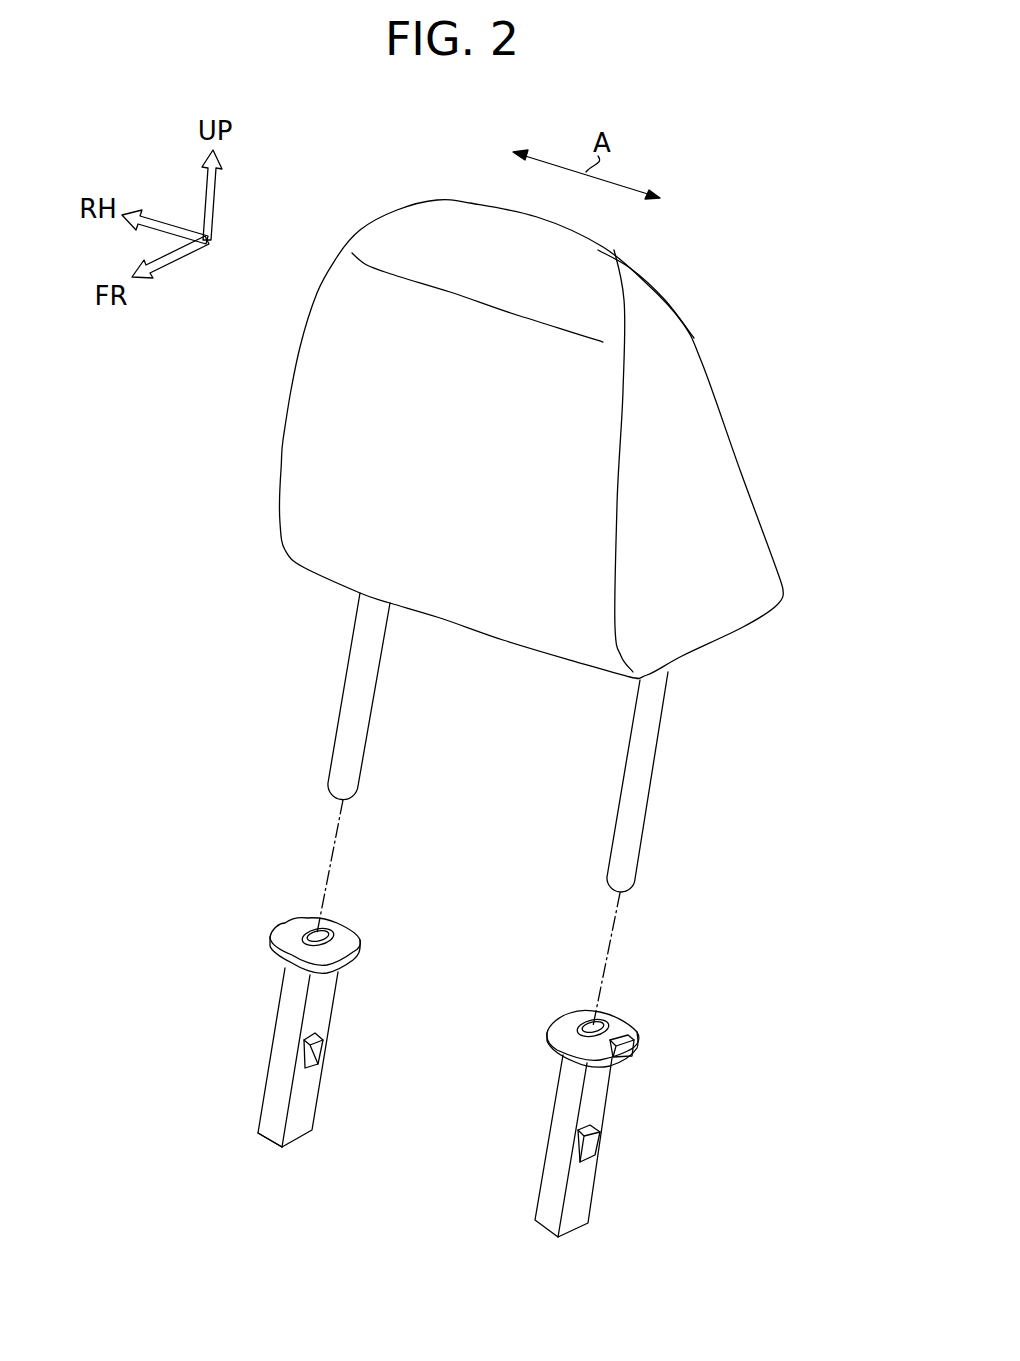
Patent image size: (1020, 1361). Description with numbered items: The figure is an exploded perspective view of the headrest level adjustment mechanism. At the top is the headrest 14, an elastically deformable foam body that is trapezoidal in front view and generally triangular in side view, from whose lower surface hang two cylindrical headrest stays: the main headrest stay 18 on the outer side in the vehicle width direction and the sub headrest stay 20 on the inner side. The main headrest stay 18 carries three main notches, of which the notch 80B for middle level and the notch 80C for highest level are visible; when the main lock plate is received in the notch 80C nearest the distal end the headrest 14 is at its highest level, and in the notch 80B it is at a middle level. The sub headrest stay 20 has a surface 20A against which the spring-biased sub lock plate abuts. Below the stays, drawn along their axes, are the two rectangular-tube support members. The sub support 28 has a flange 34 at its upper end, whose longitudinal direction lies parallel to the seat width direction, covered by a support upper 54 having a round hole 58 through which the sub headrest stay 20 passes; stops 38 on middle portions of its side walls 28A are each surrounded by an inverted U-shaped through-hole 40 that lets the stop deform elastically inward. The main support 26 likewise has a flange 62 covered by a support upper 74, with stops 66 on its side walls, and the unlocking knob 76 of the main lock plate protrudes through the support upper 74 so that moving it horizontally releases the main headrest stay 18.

The headrest 14 is at (724, 362).
The main headrest stay 18 is at (642, 798).
The sub headrest stay 20 is at (352, 682).
The surface of sub headrest stay 20A is at (349, 723).
The notch for middle level 80B is at (640, 690).
The notch for highest level 80C is at (632, 740).
The main support 26 is at (630, 1098).
The sub support 28 is at (295, 1000).
The side walls of sub support 28A is at (268, 1082).
The flange 34 is at (362, 957).
The stops 38 is at (322, 1056).
The through-hole 40 is at (326, 1048).
The support upper 54 is at (355, 932).
The round hole 58 is at (318, 934).
The flange 62 is at (622, 1050).
The stops 66 is at (594, 1146).
The support upper 74 is at (603, 1020).
The unlocking knob 76 is at (635, 1046).